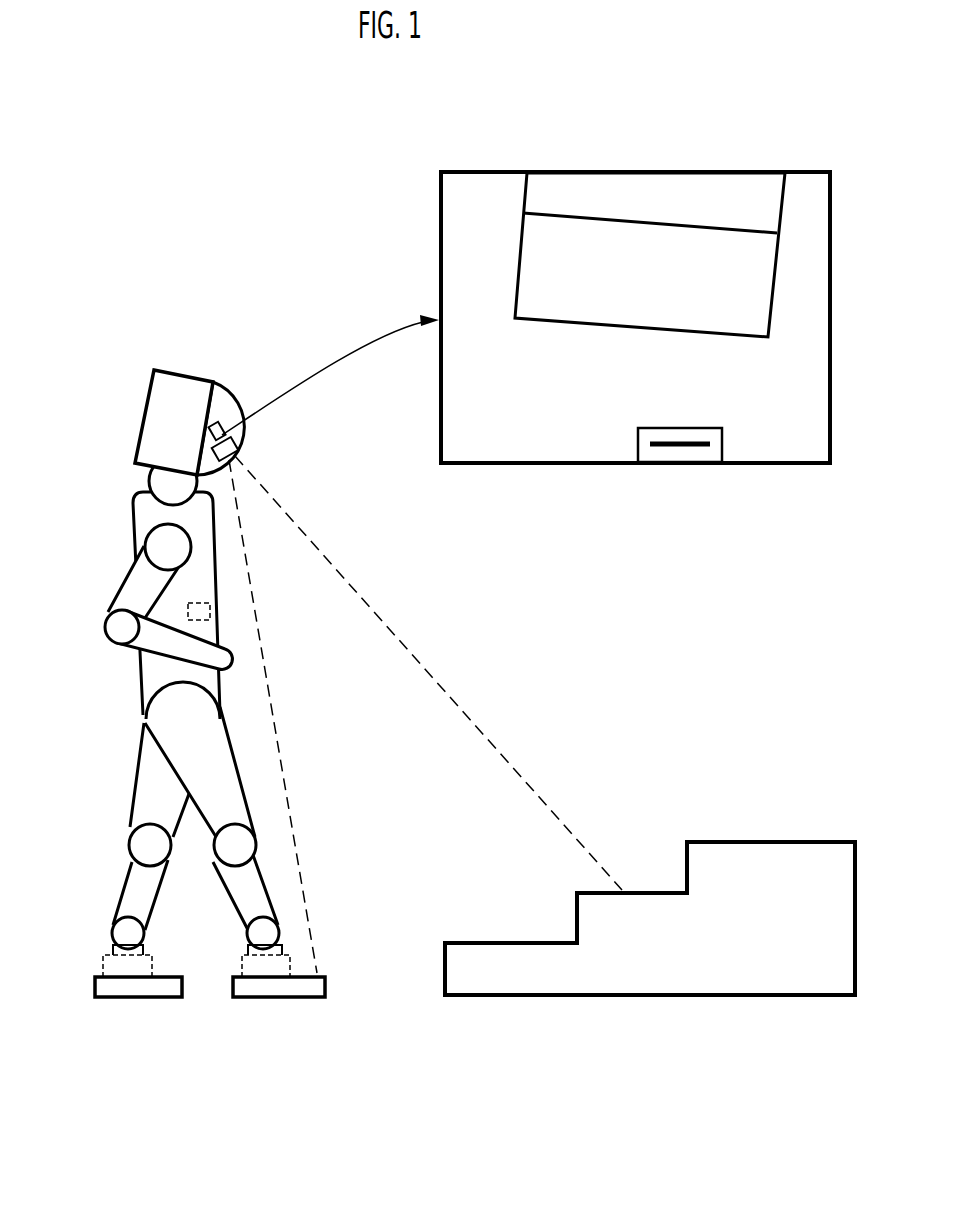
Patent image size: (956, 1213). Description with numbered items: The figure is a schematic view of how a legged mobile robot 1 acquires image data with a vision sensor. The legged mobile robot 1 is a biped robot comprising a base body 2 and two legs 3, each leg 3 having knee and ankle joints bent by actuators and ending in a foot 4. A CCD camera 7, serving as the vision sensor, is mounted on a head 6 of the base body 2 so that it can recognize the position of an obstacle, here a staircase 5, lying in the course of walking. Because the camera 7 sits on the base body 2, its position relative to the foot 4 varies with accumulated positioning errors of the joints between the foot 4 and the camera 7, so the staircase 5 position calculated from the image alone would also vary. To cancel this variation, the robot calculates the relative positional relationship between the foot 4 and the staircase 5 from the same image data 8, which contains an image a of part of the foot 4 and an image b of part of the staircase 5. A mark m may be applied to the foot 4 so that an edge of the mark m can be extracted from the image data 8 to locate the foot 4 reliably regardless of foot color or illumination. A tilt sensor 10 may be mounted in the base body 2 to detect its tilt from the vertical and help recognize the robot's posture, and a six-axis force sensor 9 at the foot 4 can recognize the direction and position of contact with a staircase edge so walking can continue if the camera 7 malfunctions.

The legged mobile robot 1 is at (130, 364).
The base body 2 is at (133, 520).
The leg 3 is at (233, 748).
The foot 4 is at (165, 975).
The staircase 5 is at (750, 842).
The head 6 is at (193, 374).
The CCD camera 7 is at (242, 440).
The image data 8 is at (700, 172).
The six-axis force sensor 9 is at (103, 966).
The tilt sensor 10 is at (212, 610).
The image of part of the foot a is at (725, 450).
The image of part of the staircase b is at (777, 303).
The mark m is at (682, 440).